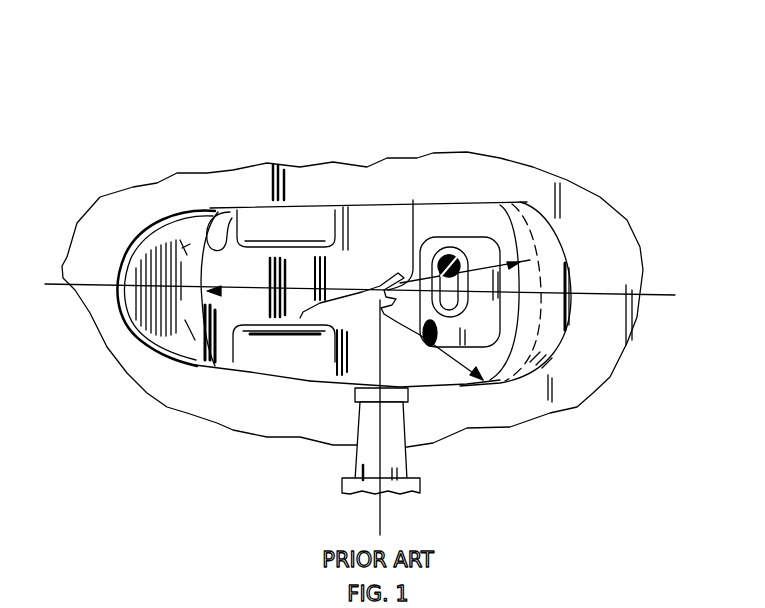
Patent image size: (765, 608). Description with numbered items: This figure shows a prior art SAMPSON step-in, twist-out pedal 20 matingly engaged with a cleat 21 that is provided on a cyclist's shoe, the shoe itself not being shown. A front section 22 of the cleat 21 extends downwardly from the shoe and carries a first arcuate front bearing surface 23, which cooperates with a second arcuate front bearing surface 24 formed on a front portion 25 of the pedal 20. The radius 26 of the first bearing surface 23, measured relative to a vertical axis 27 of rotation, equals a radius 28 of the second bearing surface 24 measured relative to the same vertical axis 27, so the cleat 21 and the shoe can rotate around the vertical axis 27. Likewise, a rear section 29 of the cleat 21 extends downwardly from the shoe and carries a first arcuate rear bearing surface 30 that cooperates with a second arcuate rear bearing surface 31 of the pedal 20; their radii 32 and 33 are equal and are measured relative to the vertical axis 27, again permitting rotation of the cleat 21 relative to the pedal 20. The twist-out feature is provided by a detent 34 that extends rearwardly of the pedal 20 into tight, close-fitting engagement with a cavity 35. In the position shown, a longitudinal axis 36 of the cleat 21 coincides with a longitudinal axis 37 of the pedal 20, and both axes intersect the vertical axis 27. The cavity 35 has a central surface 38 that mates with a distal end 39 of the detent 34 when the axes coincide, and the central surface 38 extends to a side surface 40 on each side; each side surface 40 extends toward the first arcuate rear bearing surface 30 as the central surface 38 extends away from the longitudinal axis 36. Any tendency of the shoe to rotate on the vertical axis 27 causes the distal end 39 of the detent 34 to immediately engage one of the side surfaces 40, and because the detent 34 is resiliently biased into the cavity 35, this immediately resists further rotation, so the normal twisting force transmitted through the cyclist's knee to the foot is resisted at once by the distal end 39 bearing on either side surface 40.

The step-in, twist-out pedal 20 is at (352, 203).
The cleat 21 is at (527, 203).
The front section 22 is at (572, 293).
The first arcuate front bearing surface 23 is at (548, 283).
The second arcuate front bearing surface 24 is at (535, 258).
The front portion 25 is at (483, 380).
The radius 26 is at (409, 335).
The vertical axis 27 is at (383, 292).
The radius 28 is at (414, 200).
The rear section 29 is at (188, 362).
The first arcuate rear bearing surface 30 is at (217, 212).
The second arcuate rear bearing surface 31 is at (230, 200).
The radius 32 is at (250, 246).
The radius 33 is at (300, 318).
The detent 34 is at (190, 322).
The cavity 35 is at (185, 250).
The longitudinal axis 36 is at (67, 258).
The longitudinal axis 37 is at (648, 295).
The central surface 38 is at (188, 311).
The distal end 39 is at (190, 298).
The side surface 40 is at (170, 228).